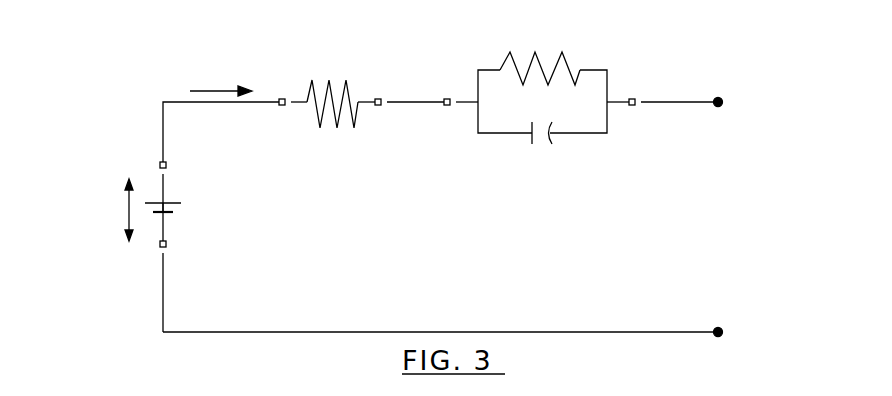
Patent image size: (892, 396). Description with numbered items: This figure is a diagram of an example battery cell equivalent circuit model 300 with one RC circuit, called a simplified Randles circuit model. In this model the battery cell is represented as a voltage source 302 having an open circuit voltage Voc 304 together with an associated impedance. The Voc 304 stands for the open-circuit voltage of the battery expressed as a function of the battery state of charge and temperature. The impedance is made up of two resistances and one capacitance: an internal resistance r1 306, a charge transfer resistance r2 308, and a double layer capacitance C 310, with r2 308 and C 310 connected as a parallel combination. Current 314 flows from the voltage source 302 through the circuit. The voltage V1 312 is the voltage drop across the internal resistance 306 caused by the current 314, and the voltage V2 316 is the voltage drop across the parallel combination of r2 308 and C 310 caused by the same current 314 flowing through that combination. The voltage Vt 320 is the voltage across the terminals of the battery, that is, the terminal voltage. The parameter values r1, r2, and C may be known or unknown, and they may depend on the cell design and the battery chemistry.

The battery cell equivalent circuit model 300 is at (362, 46).
The voltage source 302 is at (175, 203).
The open circuit voltage 304 is at (125, 204).
The internal resistance 306 is at (307, 92).
The charge transfer resistance 308 is at (570, 70).
The double layer capacitance 310 is at (529, 138).
The voltage V1 312 is at (338, 162).
The current 314 is at (200, 90).
The voltage V2 316 is at (526, 104).
The voltage Vt 320 is at (726, 207).